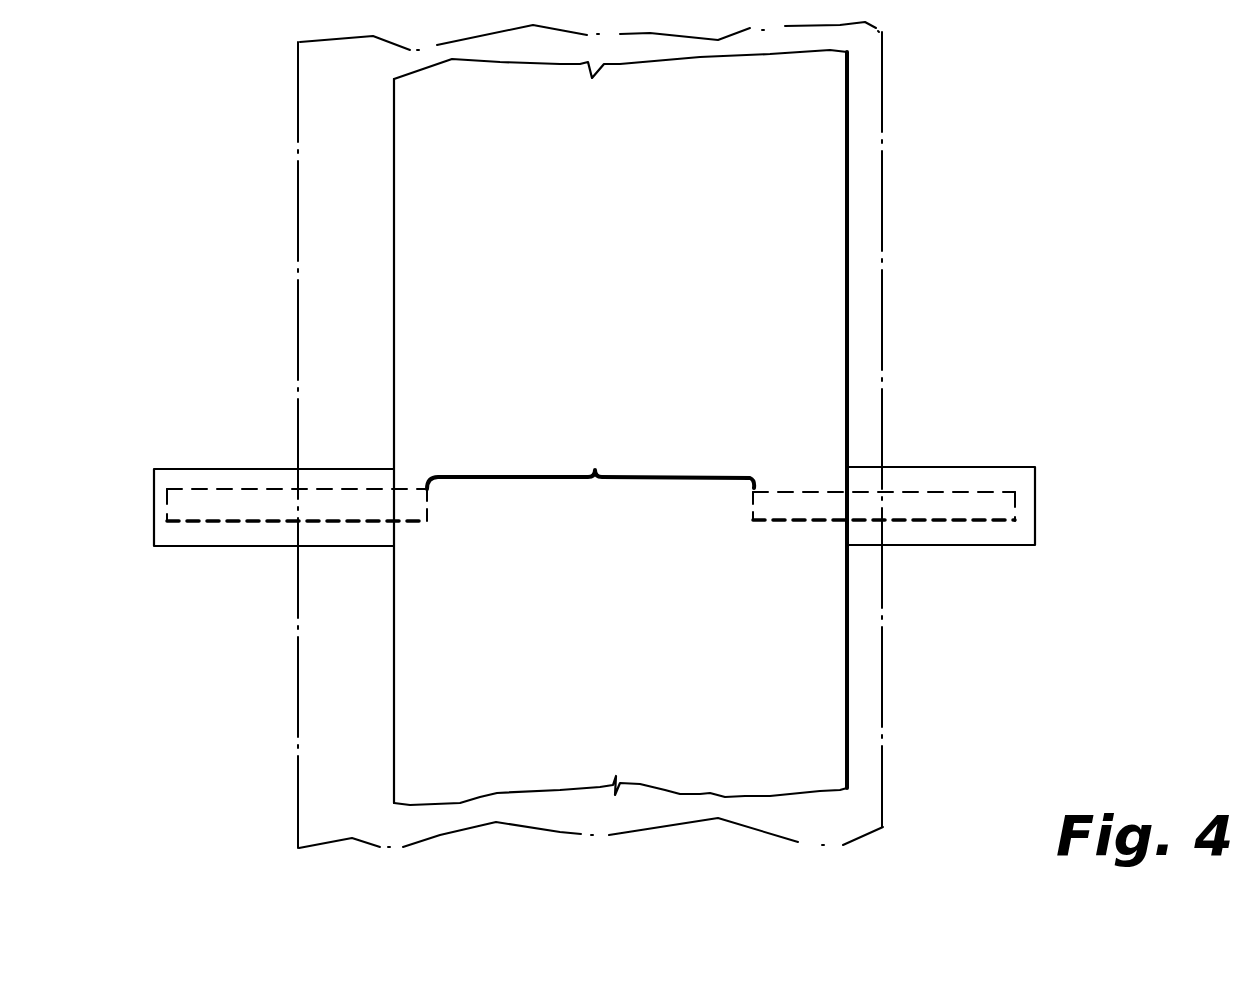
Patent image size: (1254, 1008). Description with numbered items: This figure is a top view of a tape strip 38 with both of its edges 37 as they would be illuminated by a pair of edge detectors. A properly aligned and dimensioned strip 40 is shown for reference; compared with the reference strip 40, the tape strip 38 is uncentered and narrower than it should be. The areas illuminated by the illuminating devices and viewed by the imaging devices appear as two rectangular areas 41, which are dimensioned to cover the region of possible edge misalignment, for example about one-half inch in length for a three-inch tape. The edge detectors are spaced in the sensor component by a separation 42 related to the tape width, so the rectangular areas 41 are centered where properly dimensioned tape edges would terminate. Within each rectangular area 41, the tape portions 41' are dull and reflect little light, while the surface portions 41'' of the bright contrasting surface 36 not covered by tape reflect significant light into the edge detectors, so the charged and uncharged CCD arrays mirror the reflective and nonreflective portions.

The contrasting surface 36 is at (154, 508).
The edges 37 is at (394, 215).
The tape strip 38 is at (628, 234).
The properly aligned and dimensioned strip 40 is at (883, 201).
The rectangular areas 41 is at (588, 478).
The tape portions 41' is at (601, 537).
The surface portions 41'' is at (594, 557).
The separation 42 is at (590, 463).